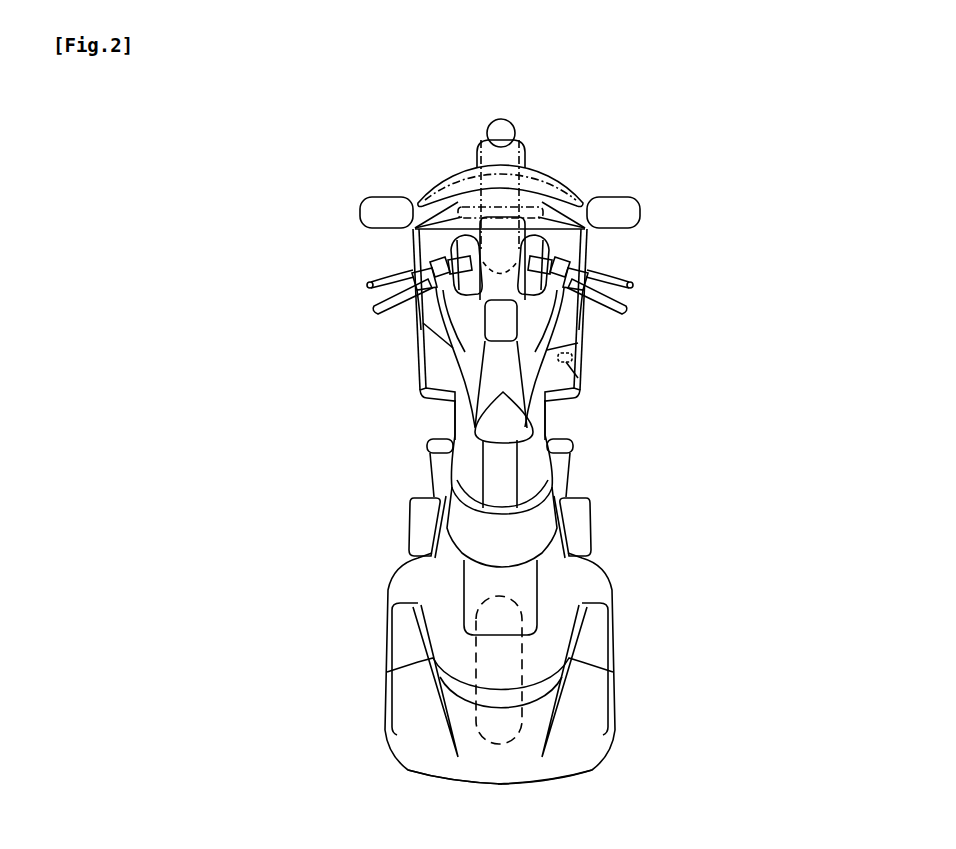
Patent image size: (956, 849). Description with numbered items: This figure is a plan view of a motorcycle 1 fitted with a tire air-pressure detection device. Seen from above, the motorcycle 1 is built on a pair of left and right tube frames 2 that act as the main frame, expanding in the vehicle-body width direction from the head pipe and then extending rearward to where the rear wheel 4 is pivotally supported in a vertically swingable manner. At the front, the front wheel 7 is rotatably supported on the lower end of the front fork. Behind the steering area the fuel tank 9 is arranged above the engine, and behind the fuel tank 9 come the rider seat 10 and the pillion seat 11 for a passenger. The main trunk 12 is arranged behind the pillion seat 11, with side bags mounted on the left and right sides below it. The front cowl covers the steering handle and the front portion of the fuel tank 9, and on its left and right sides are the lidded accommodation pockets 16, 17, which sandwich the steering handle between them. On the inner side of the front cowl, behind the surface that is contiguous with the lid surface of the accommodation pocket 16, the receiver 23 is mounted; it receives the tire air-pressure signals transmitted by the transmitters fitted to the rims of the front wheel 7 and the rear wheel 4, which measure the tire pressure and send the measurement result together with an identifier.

The motorcycle 1 is at (346, 500).
The tube frames 2 is at (540, 430).
The rear wheel 4 is at (527, 717).
The front wheel 7 is at (505, 124).
The fuel tank 9 is at (424, 392).
The rider seat 10 is at (540, 487).
The pillion seat 11 is at (518, 590).
The main trunk 12 is at (517, 753).
The accommodation pocket 16 is at (573, 326).
The accommodation pocket 17 is at (428, 320).
The receiver 23 is at (580, 378).